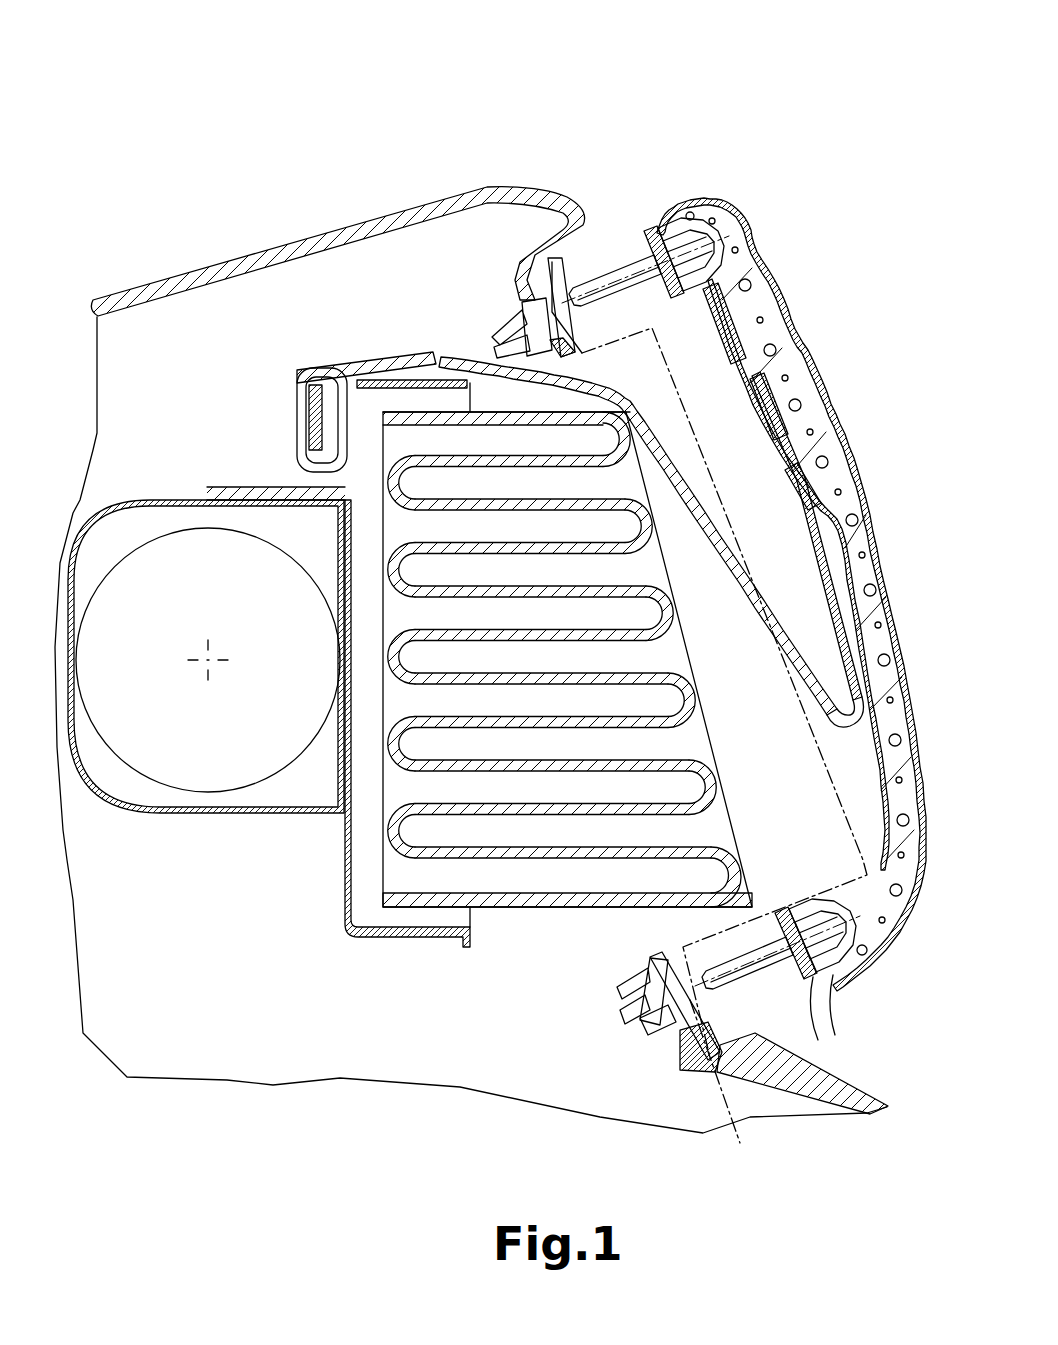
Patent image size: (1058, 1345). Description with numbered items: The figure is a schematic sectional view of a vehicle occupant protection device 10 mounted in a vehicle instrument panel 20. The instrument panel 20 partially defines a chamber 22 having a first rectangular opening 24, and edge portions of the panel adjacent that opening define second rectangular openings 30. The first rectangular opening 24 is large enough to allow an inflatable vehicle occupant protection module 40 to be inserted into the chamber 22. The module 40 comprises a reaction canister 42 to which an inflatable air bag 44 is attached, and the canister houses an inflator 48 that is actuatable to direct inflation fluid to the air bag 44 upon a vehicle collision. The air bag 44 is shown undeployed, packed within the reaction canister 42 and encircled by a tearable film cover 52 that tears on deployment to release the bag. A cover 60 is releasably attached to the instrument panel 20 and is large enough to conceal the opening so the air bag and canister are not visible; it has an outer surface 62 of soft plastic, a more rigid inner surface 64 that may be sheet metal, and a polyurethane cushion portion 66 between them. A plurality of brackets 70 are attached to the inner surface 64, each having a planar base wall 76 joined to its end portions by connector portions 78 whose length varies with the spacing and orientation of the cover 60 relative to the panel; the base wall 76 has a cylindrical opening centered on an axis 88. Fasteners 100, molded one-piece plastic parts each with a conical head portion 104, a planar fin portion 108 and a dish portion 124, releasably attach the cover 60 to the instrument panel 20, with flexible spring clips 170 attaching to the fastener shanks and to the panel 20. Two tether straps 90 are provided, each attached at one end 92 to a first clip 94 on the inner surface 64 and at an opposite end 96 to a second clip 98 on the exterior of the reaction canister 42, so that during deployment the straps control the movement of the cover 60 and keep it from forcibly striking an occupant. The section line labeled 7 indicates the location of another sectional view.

The vehicle occupant protection device 10 is at (610, 100).
The vehicle instrument panel 20 is at (450, 187).
The chamber 22 is at (383, 273).
The first rectangular opening 24 is at (647, 953).
The second rectangular openings 30 is at (668, 1017).
The inflatable vehicle occupant protection module 40 is at (295, 917).
The reaction canister 42 is at (178, 817).
The inflatable air bag 44 is at (515, 850).
The inflator 48 is at (183, 573).
The tearable film cover 52 is at (703, 673).
The cover 60 is at (791, 600).
The outer surface 62 is at (806, 357).
The inner surface 64 is at (718, 325).
The cushion portion 66 is at (758, 270).
The brackets 70 is at (663, 207).
The base wall 76 is at (652, 222).
The connector portions 78 is at (700, 298).
The axis 88 is at (724, 1089).
The tether straps 90 is at (651, 508).
The one end 92 is at (777, 467).
The first clip 94 is at (768, 412).
The opposite end 96 is at (330, 367).
The second clip 98 is at (310, 423).
The fasteners 100 is at (635, 230).
The conical head portion 104 is at (820, 880).
The fin portion 108 is at (727, 947).
The dish portion 124 is at (800, 966).
The flexible spring clips 170 is at (630, 991).
The section line 7- 7 is at (552, 262).